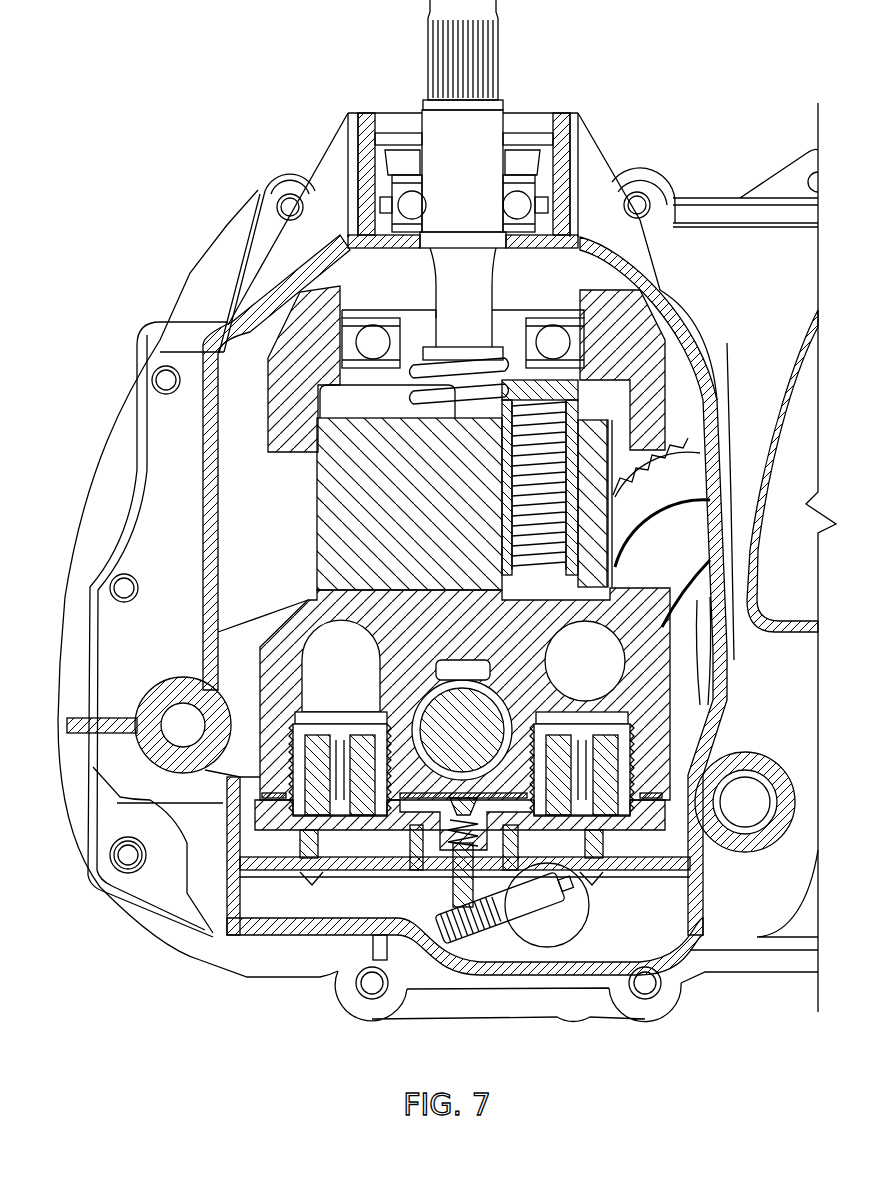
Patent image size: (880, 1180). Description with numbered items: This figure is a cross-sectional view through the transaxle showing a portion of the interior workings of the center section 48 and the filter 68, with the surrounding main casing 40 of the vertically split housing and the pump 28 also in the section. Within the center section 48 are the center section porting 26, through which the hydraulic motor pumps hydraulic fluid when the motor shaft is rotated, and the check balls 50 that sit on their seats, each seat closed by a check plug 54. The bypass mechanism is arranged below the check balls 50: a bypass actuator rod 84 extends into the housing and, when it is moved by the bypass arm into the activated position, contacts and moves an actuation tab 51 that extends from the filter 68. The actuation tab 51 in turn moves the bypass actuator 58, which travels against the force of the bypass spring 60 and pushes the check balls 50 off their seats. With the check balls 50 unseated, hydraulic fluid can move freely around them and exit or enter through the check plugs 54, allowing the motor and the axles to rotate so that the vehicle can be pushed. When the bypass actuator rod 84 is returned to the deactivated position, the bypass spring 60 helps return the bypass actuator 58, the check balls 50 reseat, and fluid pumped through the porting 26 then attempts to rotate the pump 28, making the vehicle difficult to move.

The main casing 40 is at (198, 264).
The pump 28 is at (300, 518).
The center section 48 is at (453, 633).
The center section porting 26 is at (328, 675).
The check balls 50 is at (327, 820).
The bypass spring 60 is at (443, 823).
The check plugs 54 is at (270, 873).
The bypass actuator 58 is at (333, 873).
The actuation tab 51 is at (455, 893).
The bypass actuator rod 84 is at (538, 899).
The filter 68 is at (247, 827).